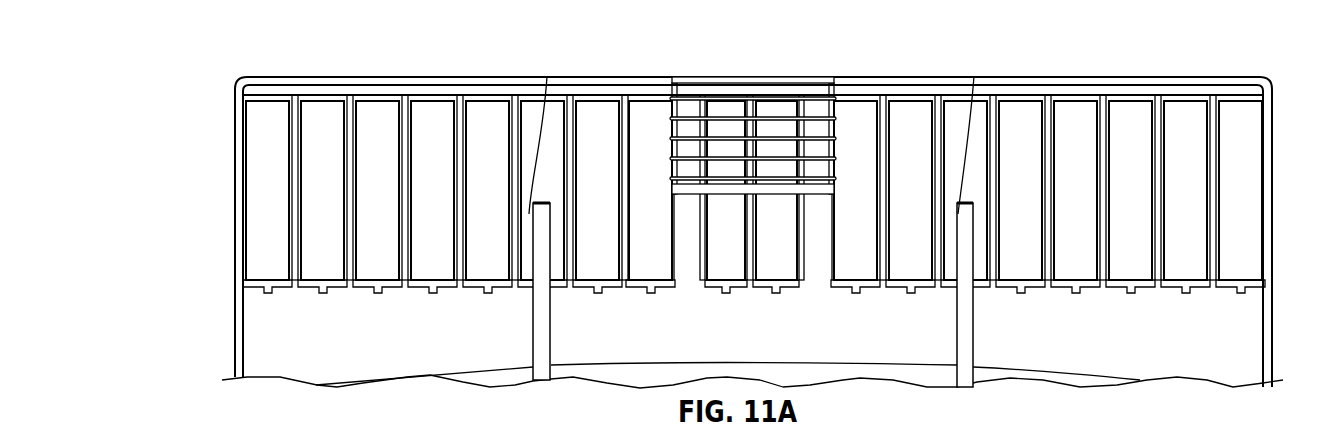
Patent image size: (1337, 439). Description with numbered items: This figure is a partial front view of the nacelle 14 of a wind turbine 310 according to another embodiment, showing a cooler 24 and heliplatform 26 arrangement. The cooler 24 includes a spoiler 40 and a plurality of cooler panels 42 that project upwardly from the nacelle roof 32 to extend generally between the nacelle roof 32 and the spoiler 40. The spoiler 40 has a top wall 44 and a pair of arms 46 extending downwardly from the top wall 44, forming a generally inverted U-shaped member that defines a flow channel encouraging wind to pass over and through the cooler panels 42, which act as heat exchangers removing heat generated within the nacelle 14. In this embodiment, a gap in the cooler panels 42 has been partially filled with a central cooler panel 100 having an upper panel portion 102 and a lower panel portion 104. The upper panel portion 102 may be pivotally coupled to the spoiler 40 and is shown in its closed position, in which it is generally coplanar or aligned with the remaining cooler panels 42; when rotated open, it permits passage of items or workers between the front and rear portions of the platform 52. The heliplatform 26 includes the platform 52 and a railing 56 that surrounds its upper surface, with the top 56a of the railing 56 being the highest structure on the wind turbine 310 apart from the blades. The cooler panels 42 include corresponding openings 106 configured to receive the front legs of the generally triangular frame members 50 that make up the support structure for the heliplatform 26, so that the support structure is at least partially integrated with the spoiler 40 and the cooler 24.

The wind turbine 310 is at (213, 104).
The spoiler 40 is at (266, 76).
The top wall 44 is at (456, 76).
The cooler panels 42 is at (265, 157).
The arms 46 is at (237, 232).
The cooler 24 is at (1276, 308).
The railing 56 is at (746, 204).
The top of the railing 56a is at (783, 80).
The upper panel portion 102 is at (790, 110).
The openings 106 is at (757, 134).
The heliplatform 26 is at (693, 203).
The lower panel portion 104 is at (710, 283).
The central cooler panel 100 is at (745, 291).
The platform 52 is at (822, 205).
The nacelle 14 is at (478, 368).
The nacelle roof 32 is at (884, 363).
The frame members 50 is at (550, 338).